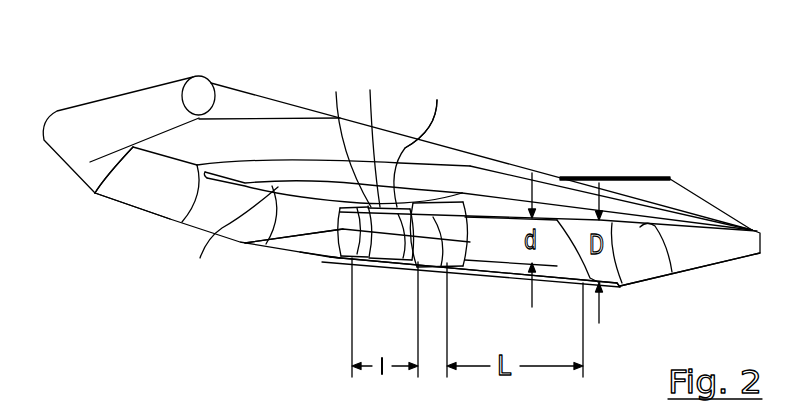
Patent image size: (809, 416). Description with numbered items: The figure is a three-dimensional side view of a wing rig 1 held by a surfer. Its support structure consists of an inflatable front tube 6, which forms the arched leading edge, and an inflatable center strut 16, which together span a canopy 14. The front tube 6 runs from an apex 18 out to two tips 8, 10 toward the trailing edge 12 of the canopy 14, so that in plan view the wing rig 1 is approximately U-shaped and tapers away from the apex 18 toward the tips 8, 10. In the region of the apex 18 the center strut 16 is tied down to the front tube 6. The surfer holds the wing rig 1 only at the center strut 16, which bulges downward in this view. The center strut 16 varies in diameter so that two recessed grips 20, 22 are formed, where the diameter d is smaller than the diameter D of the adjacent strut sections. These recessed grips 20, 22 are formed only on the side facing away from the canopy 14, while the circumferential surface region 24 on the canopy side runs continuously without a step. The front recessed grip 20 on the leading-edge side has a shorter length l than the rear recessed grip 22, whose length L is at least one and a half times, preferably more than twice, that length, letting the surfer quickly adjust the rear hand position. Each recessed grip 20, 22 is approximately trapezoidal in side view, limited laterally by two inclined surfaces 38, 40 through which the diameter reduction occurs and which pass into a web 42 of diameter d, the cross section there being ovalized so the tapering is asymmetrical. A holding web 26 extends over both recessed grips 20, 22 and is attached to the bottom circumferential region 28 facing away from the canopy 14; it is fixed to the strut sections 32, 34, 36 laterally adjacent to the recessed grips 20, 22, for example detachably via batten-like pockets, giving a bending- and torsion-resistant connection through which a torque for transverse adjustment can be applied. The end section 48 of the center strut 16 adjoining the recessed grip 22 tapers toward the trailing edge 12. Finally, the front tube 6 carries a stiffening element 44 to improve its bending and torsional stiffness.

The wing rig 1 is at (396, 108).
The front tube 6 is at (163, 202).
The tip 8 is at (170, 100).
The tip 10 is at (670, 178).
The trailing edge 12 is at (683, 192).
The canopy 14 is at (397, 162).
The center strut 16 is at (635, 287).
The apex 18 is at (317, 257).
The recessed grip 20 is at (392, 258).
The recessed grip 22 is at (515, 264).
The circumferential surface region 24 is at (657, 240).
The holding web 26 is at (478, 280).
The circumferential region 28 is at (335, 257).
The strut section 32 is at (293, 238).
The strut section 34 is at (464, 216).
The strut section 36 is at (580, 233).
The inclined surface 38 is at (347, 136).
The inclined surface 40 is at (427, 111).
The web 42 is at (370, 135).
The stiffening element 44 is at (231, 236).
The end section 48 is at (698, 256).